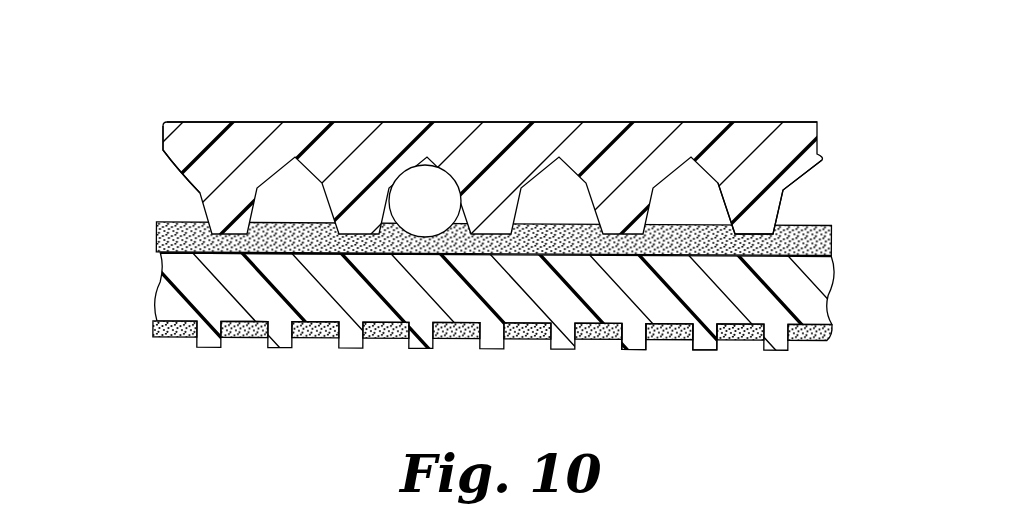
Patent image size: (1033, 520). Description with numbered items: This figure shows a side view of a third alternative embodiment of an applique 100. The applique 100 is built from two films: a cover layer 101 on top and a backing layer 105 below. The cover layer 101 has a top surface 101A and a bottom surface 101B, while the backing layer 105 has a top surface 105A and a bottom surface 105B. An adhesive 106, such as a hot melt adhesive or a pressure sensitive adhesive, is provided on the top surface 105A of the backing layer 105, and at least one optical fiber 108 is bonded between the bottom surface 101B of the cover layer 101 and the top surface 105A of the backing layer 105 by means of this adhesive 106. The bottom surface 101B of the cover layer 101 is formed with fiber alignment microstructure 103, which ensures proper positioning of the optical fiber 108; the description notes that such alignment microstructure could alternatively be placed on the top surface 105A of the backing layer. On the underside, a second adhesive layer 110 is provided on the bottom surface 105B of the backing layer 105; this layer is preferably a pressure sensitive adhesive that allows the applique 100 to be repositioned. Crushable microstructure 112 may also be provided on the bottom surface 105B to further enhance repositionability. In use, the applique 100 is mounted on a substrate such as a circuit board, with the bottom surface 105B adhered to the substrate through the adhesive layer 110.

The applique 100 is at (786, 80).
The cover layer 101 is at (274, 122).
The top surface of cover layer 101A is at (596, 122).
The bottom surface of cover layer 101B is at (190, 172).
The fiber alignment microstructure 103 is at (768, 197).
The backing layer 105 is at (812, 308).
The top surface of backing layer 105A is at (172, 248).
The bottom surface of backing layer 105B is at (822, 340).
The adhesive 106 is at (832, 243).
The optical fiber 108 is at (427, 180).
The second adhesive layer 110 is at (390, 336).
The crushable microstructure 112 is at (702, 338).